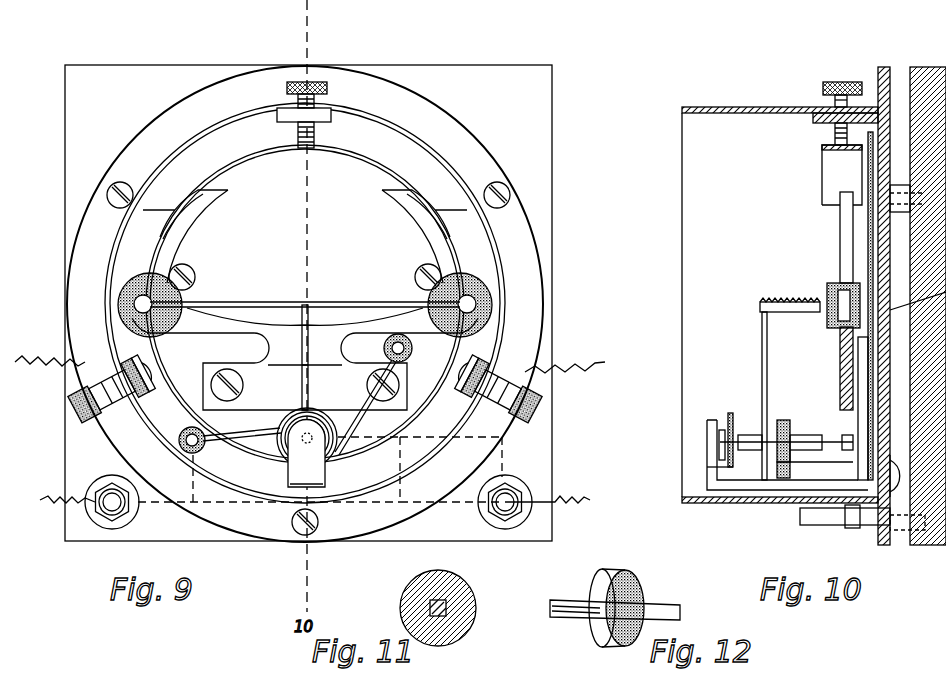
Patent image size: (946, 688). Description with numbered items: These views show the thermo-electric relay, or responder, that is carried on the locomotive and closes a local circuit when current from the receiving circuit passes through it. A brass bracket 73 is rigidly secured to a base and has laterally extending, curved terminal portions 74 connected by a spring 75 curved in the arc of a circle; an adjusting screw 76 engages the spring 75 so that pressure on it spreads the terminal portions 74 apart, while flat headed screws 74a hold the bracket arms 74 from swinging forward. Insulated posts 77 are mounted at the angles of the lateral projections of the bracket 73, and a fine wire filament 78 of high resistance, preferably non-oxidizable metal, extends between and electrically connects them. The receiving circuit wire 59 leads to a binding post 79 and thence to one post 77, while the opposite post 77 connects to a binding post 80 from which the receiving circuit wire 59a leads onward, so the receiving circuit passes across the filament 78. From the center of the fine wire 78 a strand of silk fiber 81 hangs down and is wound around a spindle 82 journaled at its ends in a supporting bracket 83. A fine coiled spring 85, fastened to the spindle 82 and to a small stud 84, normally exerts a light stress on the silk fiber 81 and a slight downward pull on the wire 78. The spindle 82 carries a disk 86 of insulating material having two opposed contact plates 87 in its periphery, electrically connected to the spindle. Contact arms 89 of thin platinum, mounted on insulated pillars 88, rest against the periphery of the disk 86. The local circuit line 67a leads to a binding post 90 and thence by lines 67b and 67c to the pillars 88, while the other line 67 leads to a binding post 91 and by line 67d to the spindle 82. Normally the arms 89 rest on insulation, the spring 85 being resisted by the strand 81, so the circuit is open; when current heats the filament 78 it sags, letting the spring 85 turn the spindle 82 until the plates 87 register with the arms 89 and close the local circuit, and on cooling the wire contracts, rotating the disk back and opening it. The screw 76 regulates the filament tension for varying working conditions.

In FIG. 9, the receiving circuit wire 59 is at (50, 351).
In FIG. 9, the receiving circuit wire 59a is at (565, 357).
In FIG. 9, the line of local circuit 67 is at (553, 492).
In FIG. 9, the line of local circuit 67a is at (53, 490).
In FIG. 9, the line 67b is at (192, 492).
In FIG. 9, the line 67c is at (400, 440).
In FIG. 9, the line 67d is at (412, 437).
In FIG. 9, the brass bracket 73 is at (305, 364).
In FIG. 10, the brass bracket 73 is at (840, 365).
In FIG. 9, the terminal portions of bracket 74 is at (192, 231).
In FIG. 10, the terminal portions of bracket 74 is at (840, 232).
In FIG. 9, the flat headed screws 74a is at (196, 284).
In FIG. 9, the spring 75 is at (374, 160).
In FIG. 10, the spring 75 is at (828, 170).
In FIG. 9, the adjusting screw 76 is at (327, 88).
In FIG. 10, the adjusting screw 76 is at (823, 88).
In FIG. 9, the insulated posts 77 is at (145, 290).
In FIG. 10, the insulated posts 77 is at (810, 292).
In FIG. 9, the fine wire filament 78 is at (287, 304).
In FIG. 10, the fine wire filament 78 is at (760, 300).
In FIG. 9, the binding post 79 is at (140, 370).
In FIG. 9, the binding post 80 is at (506, 375).
In FIG. 9, the silk fiber strand 81 is at (302, 364).
In FIG. 10, the silk fiber strand 81 is at (762, 366).
In FIG. 9, the spindle 82 is at (306, 454).
In FIG. 10, the spindle 82 is at (770, 438).
In FIG. 12, the spindle 82 is at (668, 603).
In FIG. 9, the supporting bracket 83 is at (318, 475).
In FIG. 10, the supporting bracket 83 is at (765, 490).
In FIG. 10, the stud 84 is at (735, 462).
In FIG. 9, the coiled spring 85 is at (280, 445).
In FIG. 10, the coiled spring 85 is at (728, 413).
In FIG. 10, the disk 86 is at (791, 436).
In FIG. 11, the disk 86 is at (428, 600).
In FIG. 12, the disk 86 is at (622, 572).
In FIG. 11, the contact plates 87 is at (456, 590).
In FIG. 12, the contact plates 87 is at (644, 588).
In FIG. 9, the insulated pillars 88 is at (201, 432).
In FIG. 9, the contact arms 89 is at (299, 413).
In FIG. 9, the binding post 90 is at (116, 506).
In FIG. 10, the binding post 90 is at (840, 522).
In FIG. 9, the binding post 91 is at (508, 498).